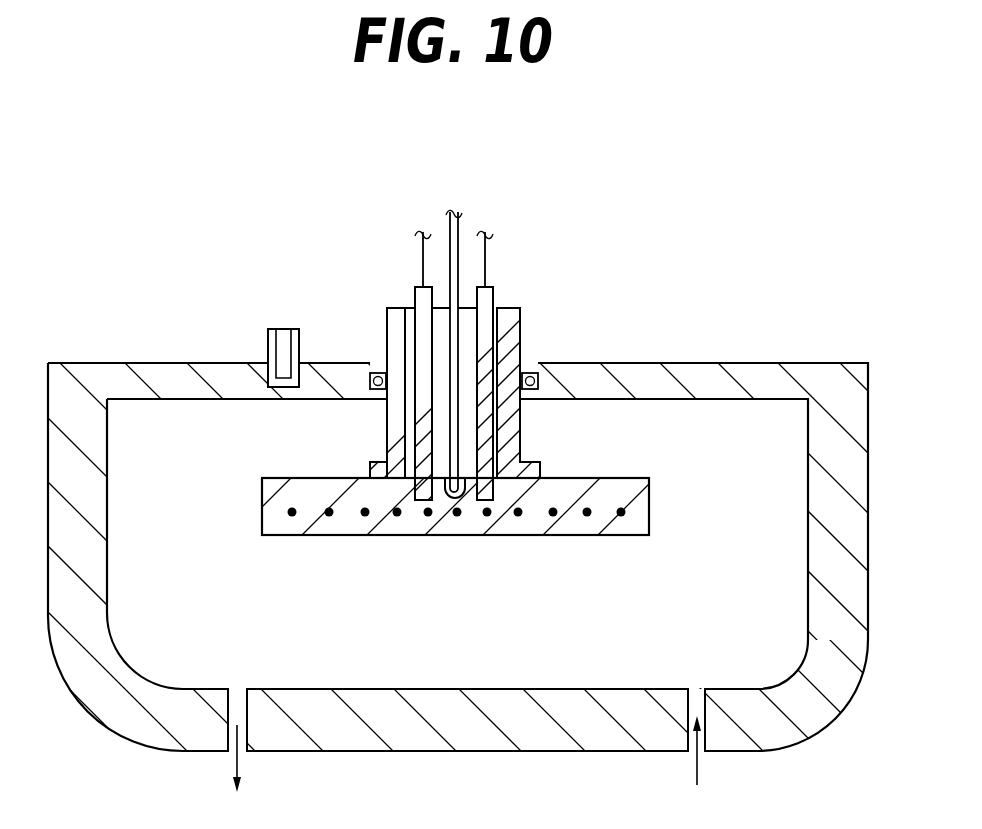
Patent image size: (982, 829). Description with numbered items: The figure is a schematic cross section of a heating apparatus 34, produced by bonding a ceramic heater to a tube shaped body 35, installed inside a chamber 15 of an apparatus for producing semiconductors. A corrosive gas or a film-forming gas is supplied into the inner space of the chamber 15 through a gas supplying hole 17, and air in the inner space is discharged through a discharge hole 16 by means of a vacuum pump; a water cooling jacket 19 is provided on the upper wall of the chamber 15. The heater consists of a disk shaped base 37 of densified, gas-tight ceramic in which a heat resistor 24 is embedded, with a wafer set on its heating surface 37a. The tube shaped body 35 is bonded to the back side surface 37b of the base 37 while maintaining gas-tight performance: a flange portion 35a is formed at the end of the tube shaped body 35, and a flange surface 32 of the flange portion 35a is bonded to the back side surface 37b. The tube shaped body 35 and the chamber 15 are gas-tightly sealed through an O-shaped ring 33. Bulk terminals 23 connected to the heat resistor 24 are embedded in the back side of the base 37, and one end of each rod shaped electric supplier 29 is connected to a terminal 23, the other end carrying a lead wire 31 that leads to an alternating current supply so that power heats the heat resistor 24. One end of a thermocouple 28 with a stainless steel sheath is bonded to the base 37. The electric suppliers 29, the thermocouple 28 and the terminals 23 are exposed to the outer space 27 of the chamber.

The chamber 15 is at (540, 735).
The discharge hole 16 is at (238, 688).
The gas supplying hole 17 is at (700, 690).
The water cooling jacket 19 is at (268, 356).
The bulk terminals 23 is at (449, 500).
The heat resistor 24 is at (363, 516).
The outer space 27 is at (500, 446).
The thermocouple 28 is at (459, 228).
The electric suppliers 29 is at (494, 297).
The lead wire 31 is at (422, 250).
The flange surface 32 is at (532, 478).
The O-shaped ring 33 is at (376, 374).
The heating apparatus 34 is at (641, 398).
The tube shaped body 35 is at (393, 310).
The flange portion 35a is at (372, 470).
The disk shaped base 37 is at (451, 515).
The heating surface 37a is at (500, 535).
The back side surface 37b is at (307, 475).